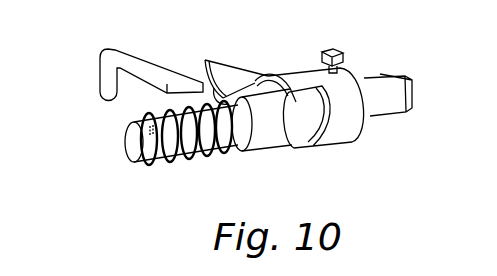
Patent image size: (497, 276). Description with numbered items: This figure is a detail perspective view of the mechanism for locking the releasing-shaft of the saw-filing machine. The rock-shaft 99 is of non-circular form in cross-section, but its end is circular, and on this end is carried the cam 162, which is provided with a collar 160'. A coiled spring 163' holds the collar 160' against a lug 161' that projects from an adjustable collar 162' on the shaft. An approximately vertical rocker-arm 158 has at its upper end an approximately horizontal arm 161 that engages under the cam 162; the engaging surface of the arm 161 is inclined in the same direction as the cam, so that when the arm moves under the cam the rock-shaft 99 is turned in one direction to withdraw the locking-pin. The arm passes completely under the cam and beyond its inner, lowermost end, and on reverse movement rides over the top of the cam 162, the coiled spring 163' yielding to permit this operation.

The rocker-arm 158 is at (100, 82).
The horizontal arm 161 is at (173, 65).
The cam 162 is at (236, 67).
The lug 161' is at (283, 69).
The adjustable collar 162' is at (329, 93).
The rock-shaft 99 is at (375, 83).
The coiled spring 163' is at (181, 144).
The collar 160' is at (261, 130).